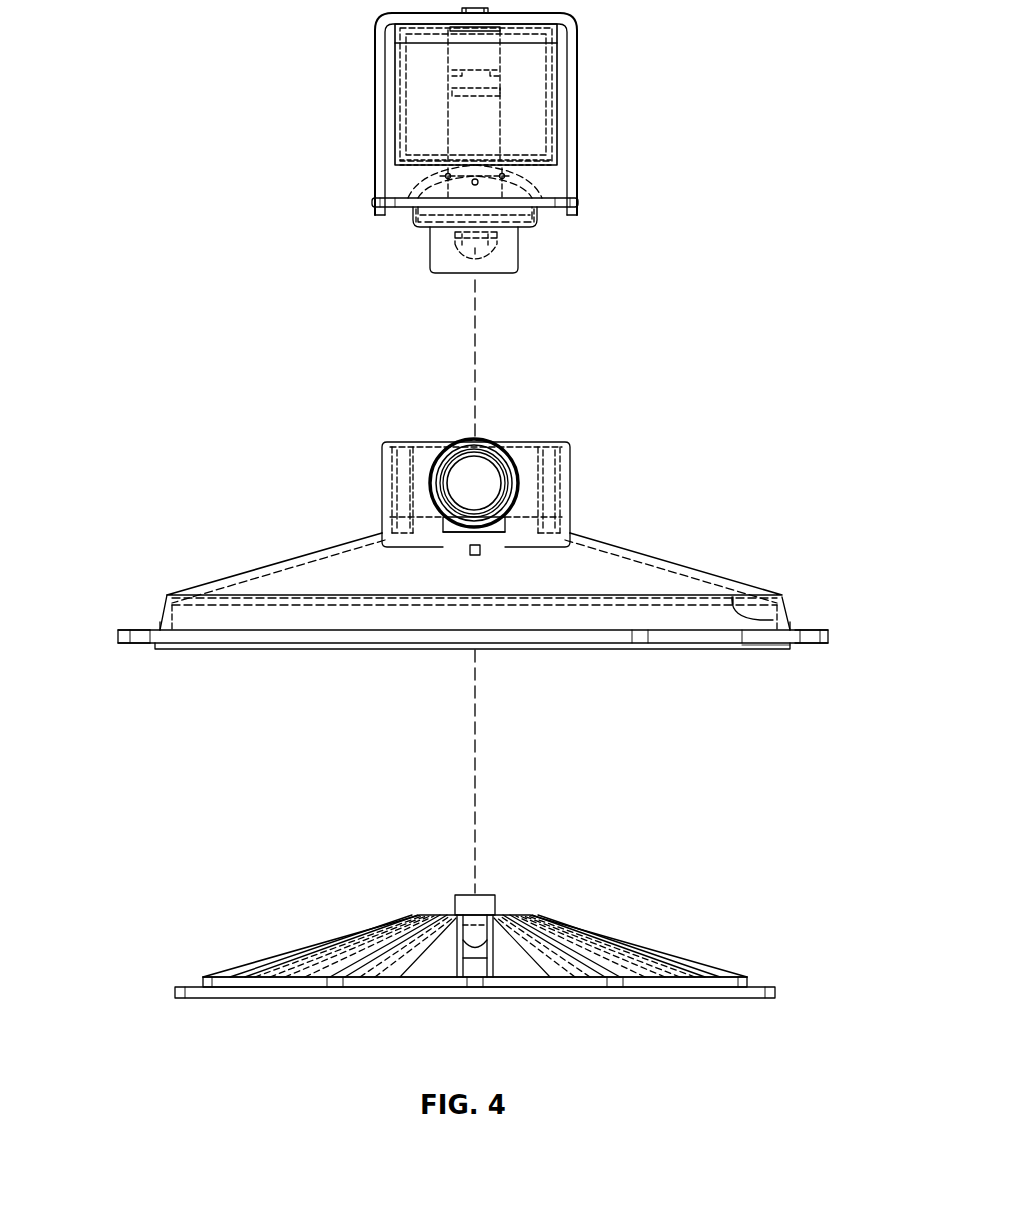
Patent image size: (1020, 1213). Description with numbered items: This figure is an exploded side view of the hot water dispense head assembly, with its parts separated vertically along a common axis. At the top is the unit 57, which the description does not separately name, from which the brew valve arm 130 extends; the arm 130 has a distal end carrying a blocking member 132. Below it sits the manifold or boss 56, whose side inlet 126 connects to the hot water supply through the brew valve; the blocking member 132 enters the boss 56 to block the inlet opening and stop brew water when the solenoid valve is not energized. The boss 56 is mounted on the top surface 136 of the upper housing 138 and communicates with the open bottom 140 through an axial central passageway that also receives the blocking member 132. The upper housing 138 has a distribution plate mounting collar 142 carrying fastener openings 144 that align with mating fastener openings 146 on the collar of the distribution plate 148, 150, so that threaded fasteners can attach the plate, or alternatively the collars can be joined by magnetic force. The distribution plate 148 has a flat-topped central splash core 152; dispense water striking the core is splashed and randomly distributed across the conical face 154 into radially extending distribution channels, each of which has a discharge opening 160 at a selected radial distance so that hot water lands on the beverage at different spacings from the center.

The sensor housing assembly 57 is at (578, 70).
The arm 130 is at (505, 140).
The blocking member 132 is at (478, 248).
The manifold 56 is at (572, 488).
The side inlet 126 is at (485, 473).
The top surface 136 is at (622, 555).
The upper housing 138 is at (205, 622).
The open bottom 140 is at (413, 450).
The distribution plate mounting collar 142 is at (148, 630).
The fastener openings 144 is at (133, 630).
The discharge opening 160 is at (732, 597).
The distribution plate 150 is at (633, 922).
The flat-topped central splash core 152 is at (490, 910).
The conical face 154 is at (347, 933).
The mating fastener openings 146 is at (185, 985).
The distribution plate 148 is at (178, 1003).